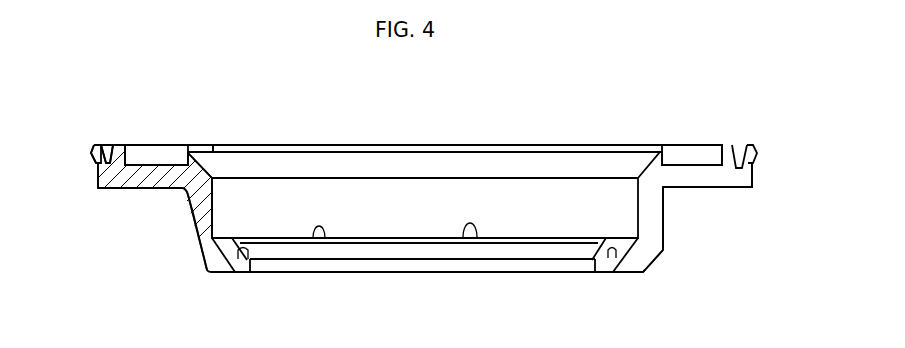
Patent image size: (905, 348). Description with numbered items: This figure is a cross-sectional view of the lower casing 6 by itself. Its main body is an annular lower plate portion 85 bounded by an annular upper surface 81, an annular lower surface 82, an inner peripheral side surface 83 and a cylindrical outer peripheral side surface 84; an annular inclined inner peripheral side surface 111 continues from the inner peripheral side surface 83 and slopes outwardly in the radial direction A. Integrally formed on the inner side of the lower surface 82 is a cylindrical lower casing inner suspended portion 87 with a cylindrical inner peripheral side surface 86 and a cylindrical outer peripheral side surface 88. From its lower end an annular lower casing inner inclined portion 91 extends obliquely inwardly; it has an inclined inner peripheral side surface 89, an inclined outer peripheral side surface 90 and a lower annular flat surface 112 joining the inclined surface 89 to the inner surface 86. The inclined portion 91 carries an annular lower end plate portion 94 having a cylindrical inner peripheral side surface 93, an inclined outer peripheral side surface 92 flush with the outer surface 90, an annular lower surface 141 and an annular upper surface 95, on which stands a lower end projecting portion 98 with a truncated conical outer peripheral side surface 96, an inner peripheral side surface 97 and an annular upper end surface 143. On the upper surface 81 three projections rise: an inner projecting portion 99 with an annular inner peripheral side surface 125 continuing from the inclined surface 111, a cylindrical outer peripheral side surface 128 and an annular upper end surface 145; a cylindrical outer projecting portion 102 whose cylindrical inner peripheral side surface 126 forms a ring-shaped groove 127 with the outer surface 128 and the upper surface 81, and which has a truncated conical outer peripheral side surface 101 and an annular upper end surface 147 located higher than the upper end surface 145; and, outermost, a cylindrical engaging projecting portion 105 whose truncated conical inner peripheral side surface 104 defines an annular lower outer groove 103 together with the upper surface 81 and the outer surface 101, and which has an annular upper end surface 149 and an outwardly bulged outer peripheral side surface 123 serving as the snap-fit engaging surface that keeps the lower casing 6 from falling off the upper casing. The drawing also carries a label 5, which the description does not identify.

The lower casing 6 is at (635, 114).
The optical element 5 is at (428, 224).
The annular upper surface 81 is at (173, 158).
The annular lower surface 82 is at (132, 188).
The inner peripheral side surface 83 is at (333, 185).
The cylindrical outer peripheral side surface 84 is at (98, 180).
The annular lower plate portion 85 is at (697, 173).
The cylindrical inner peripheral side surface 86 is at (346, 222).
The lower casing inner suspended portion 87 is at (189, 221).
The cylindrical outer peripheral side surface 88 is at (187, 207).
The inclined inner peripheral side surface 89 is at (217, 273).
The inclined outer peripheral side surface 90 is at (664, 247).
The lower casing inner inclined portion 91 is at (637, 258).
The inclined outer peripheral side surface 92 is at (648, 267).
The cylindrical inner peripheral side surface 93 is at (505, 263).
The annular lower end plate portion 94 is at (250, 265).
The annular upper surface 95 is at (552, 258).
The truncated conical outer peripheral side surface 96 is at (663, 188).
The inner peripheral side surface 97 is at (290, 250).
The lower end projecting portion 98 is at (599, 237).
The inner projecting portion 99 is at (195, 157).
The truncated conical outer peripheral side surface 101 is at (96, 157).
The cylindrical outer projecting portion 102 is at (123, 160).
The annular lower outer groove 103 is at (740, 150).
The truncated conical inner peripheral side surface 104 is at (102, 155).
The cylindrical engaging projecting portion 105 is at (753, 150).
The annular inclined inner peripheral side surface 111 is at (222, 160).
The lower annular flat surface 112 is at (463, 238).
The outer peripheral side surface 123 is at (93, 161).
The annular inner peripheral side surface 125 is at (205, 160).
The cylindrical inner peripheral side surface 126 is at (147, 153).
The ring-shaped groove 127 is at (682, 158).
The cylindrical outer peripheral side surface 128 is at (189, 150).
The annular lower surface 141 is at (388, 272).
The annular upper end surface 143 is at (313, 238).
The annular upper end surface 145 is at (510, 151).
The annular upper end surface 147 is at (556, 144).
The annular upper end surface 149 is at (84, 152).